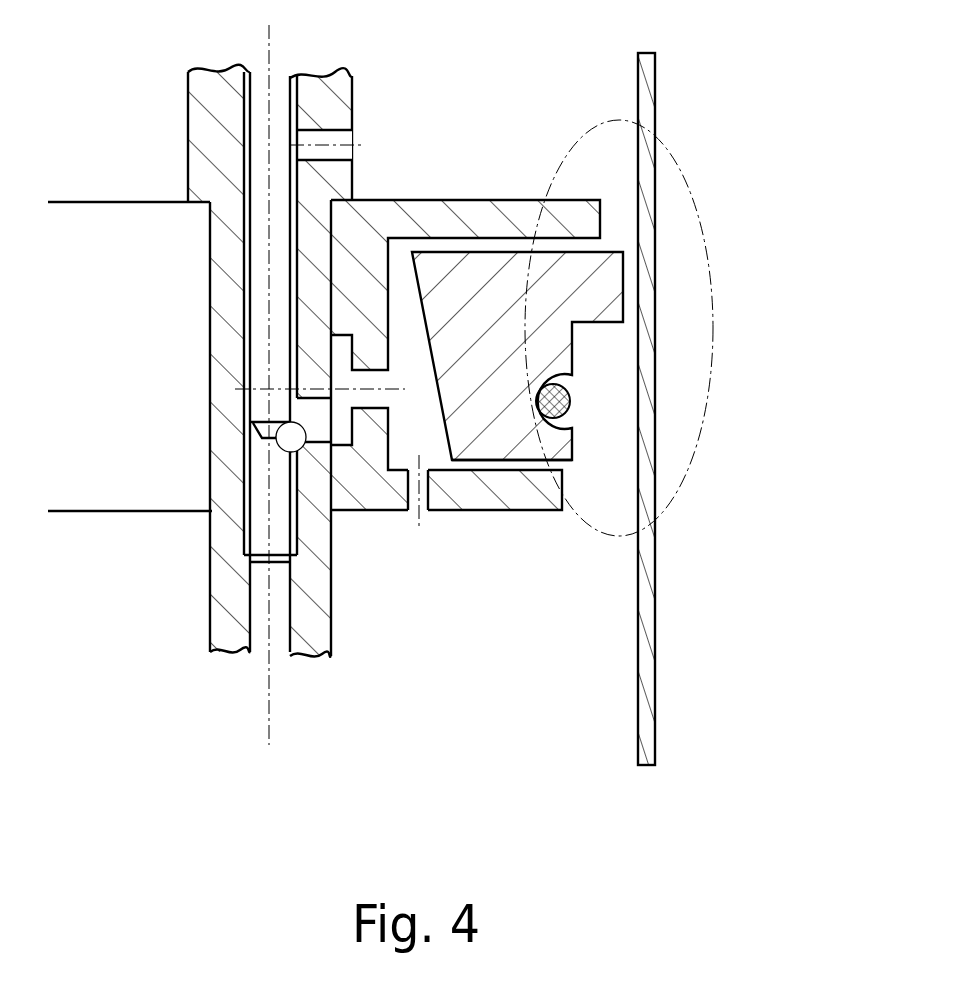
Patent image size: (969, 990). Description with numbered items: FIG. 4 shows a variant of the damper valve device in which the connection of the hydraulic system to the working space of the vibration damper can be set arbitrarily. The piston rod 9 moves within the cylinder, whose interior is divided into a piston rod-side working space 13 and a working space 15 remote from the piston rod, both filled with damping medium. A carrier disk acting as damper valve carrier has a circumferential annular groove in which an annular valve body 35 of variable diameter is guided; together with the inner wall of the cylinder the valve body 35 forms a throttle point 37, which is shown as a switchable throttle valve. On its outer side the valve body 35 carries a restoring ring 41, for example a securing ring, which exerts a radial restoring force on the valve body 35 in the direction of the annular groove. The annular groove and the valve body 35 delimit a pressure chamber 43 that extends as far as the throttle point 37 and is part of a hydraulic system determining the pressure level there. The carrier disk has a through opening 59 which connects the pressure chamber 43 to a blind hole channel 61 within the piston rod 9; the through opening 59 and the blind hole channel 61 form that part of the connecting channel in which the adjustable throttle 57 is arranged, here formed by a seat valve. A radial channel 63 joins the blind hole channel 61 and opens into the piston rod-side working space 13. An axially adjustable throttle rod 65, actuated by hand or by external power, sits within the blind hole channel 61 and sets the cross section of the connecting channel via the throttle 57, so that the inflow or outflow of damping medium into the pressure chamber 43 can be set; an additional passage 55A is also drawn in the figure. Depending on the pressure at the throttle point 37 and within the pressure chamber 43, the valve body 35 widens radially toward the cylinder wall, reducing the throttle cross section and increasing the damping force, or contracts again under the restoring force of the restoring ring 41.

The piston rod 9 is at (213, 107).
The piston rod-side working space 13 is at (526, 162).
The working space remote from the piston rod 15 is at (495, 683).
The valve body 35 is at (517, 440).
The throttle point 37 is at (673, 157).
The restoring ring 41 is at (577, 400).
The pressure chamber 43 is at (398, 332).
The channel 55A is at (427, 512).
The throttle 57 is at (300, 447).
The through opening 59 is at (373, 379).
The blind hole channel 61 is at (242, 526).
The radial channel 63 is at (313, 140).
The throttle rod 65 is at (260, 230).